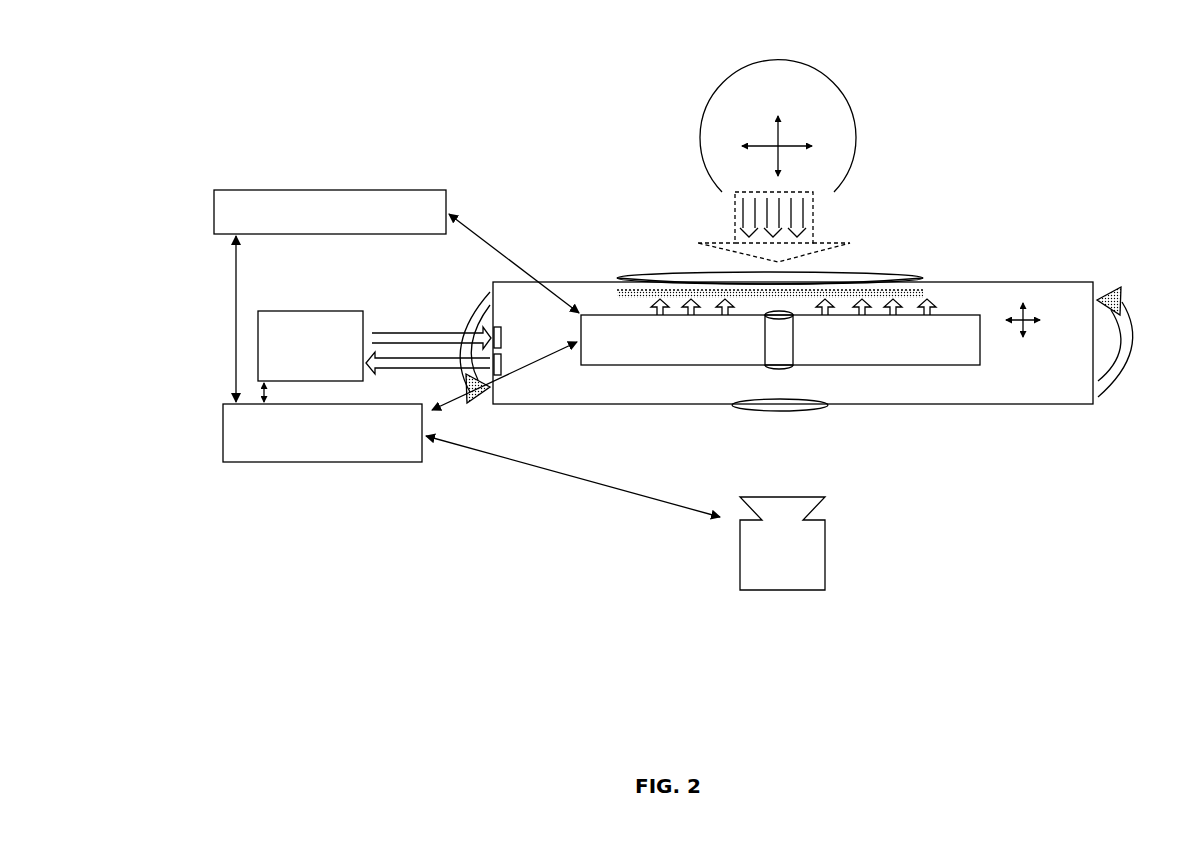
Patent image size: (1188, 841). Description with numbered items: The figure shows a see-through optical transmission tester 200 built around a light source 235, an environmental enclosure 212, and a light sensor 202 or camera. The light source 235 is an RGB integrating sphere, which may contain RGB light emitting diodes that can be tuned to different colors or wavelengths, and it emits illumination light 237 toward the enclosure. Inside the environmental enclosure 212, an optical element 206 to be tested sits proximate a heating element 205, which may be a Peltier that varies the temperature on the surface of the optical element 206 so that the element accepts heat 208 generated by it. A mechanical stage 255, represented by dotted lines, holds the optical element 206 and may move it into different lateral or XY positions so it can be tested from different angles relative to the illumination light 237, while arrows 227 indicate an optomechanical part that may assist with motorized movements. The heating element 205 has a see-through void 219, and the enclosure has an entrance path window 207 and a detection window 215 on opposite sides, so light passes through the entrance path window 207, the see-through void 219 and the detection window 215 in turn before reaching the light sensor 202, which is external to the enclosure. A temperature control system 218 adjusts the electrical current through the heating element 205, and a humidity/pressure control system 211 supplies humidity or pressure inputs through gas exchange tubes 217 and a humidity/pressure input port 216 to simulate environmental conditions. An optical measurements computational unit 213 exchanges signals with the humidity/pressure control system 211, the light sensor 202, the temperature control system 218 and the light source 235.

The see-through optical transmission tester 200 is at (958, 74).
The light sensor 202 is at (740, 541).
The heating element 205 is at (648, 365).
The optical element 206 is at (620, 283).
The entrance path window 207 is at (880, 273).
The heat 208 is at (930, 316).
The humidity/pressure control system 211 is at (302, 311).
The environmental enclosure 212 is at (1060, 282).
The optical measurements computational unit 213 is at (330, 462).
The detection window 215 is at (735, 408).
The humidity/pressure input port 216 is at (503, 338).
The gas exchange tubes 217 is at (412, 332).
The temperature control system 218 is at (430, 190).
The see-through void 219 is at (793, 330).
The arrows indicating optomechanical part 227 is at (1120, 296).
The light source 235 is at (702, 148).
The illumination light 237 is at (815, 222).
The mechanical stage 255 is at (617, 295).